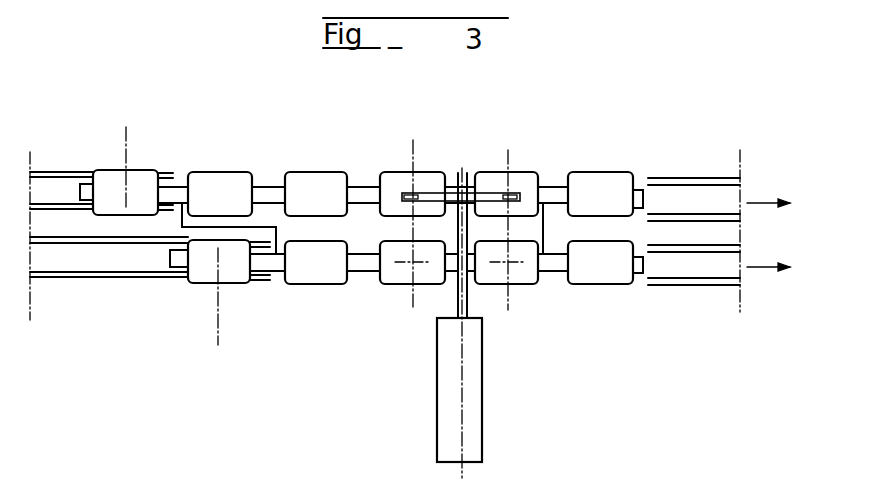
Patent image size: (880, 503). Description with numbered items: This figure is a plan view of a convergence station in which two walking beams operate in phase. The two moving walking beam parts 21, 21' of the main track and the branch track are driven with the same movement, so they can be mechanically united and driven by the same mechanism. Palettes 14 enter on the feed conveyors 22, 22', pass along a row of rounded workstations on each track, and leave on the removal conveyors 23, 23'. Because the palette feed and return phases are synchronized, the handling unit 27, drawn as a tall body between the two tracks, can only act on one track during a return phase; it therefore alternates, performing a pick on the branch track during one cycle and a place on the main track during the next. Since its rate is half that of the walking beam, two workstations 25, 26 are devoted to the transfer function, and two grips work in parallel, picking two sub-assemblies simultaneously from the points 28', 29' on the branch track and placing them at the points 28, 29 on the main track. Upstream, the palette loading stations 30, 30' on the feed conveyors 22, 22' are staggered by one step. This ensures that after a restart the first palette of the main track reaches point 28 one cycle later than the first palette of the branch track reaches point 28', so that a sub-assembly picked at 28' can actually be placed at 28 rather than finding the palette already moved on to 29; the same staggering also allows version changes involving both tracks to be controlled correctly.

The palettes 14 is at (213, 182).
The moving walking beam part 21 is at (363, 158).
The moving walking beam part 21' is at (409, 294).
The feed conveyor 22 is at (101, 153).
The feed conveyor 22' is at (150, 286).
The removal conveyor 23 is at (694, 175).
The removal conveyor 23' is at (694, 292).
The workstation 25 is at (413, 162).
The workstation 26 is at (508, 167).
The handling unit 27 is at (458, 397).
The place point 28 is at (461, 164).
The pick point 28' is at (399, 299).
The place point 29 is at (546, 164).
The pick point 29' is at (533, 300).
The palette loading station 30 is at (129, 155).
The palette loading station 30' is at (200, 292).